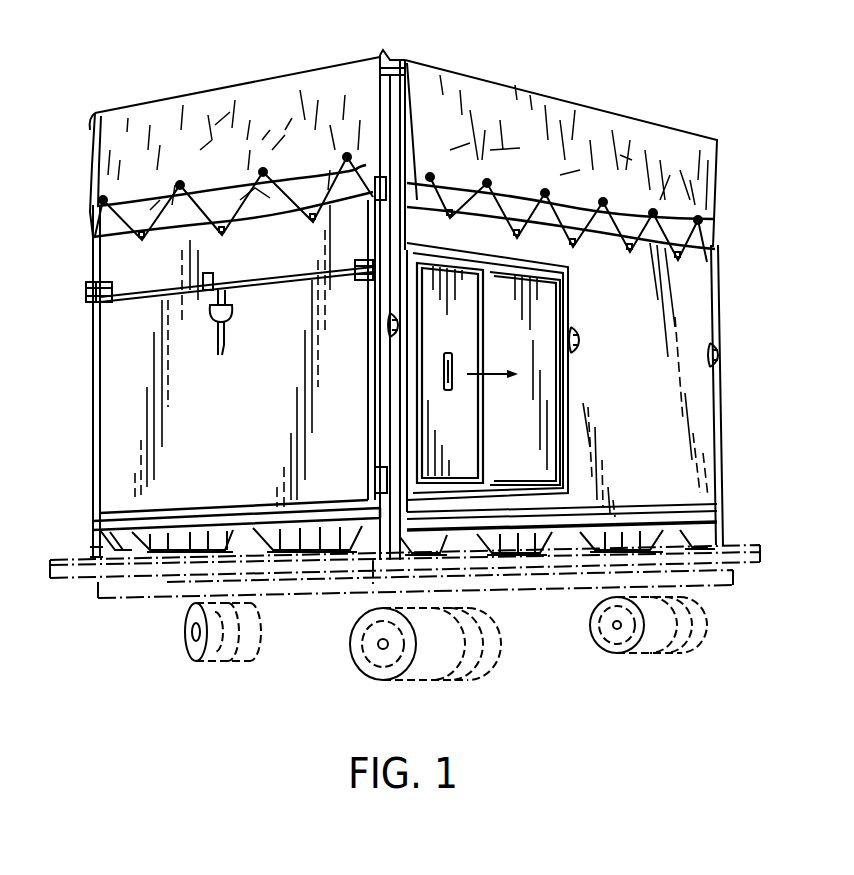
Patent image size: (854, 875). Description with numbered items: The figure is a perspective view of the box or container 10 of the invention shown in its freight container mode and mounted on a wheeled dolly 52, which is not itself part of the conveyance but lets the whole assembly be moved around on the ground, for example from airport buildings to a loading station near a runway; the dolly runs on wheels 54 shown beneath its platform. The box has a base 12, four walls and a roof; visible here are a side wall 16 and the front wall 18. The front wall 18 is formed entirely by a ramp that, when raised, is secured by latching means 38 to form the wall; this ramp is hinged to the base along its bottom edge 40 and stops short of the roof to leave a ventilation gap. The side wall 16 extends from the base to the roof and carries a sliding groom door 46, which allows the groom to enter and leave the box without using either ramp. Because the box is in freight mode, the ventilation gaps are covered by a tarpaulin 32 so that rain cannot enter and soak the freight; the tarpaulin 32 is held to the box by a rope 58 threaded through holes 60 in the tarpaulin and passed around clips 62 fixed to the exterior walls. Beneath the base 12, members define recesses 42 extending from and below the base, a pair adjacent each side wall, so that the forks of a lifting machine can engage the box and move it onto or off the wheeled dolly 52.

The box or container 10 is at (88, 375).
The base 12 is at (723, 524).
The side wall 16 is at (681, 297).
The front wall 18 is at (138, 458).
The tarpaulin 32 is at (590, 123).
The latching means 38 is at (236, 299).
The bottom edge 40 is at (88, 521).
The recesses 42 is at (303, 560).
The sliding groom door 46 is at (465, 460).
The wheeled dolly 52 is at (511, 597).
The wheel 54 is at (387, 680).
The rope 58 is at (95, 234).
The holes 60 is at (262, 175).
The clips 62 is at (227, 237).